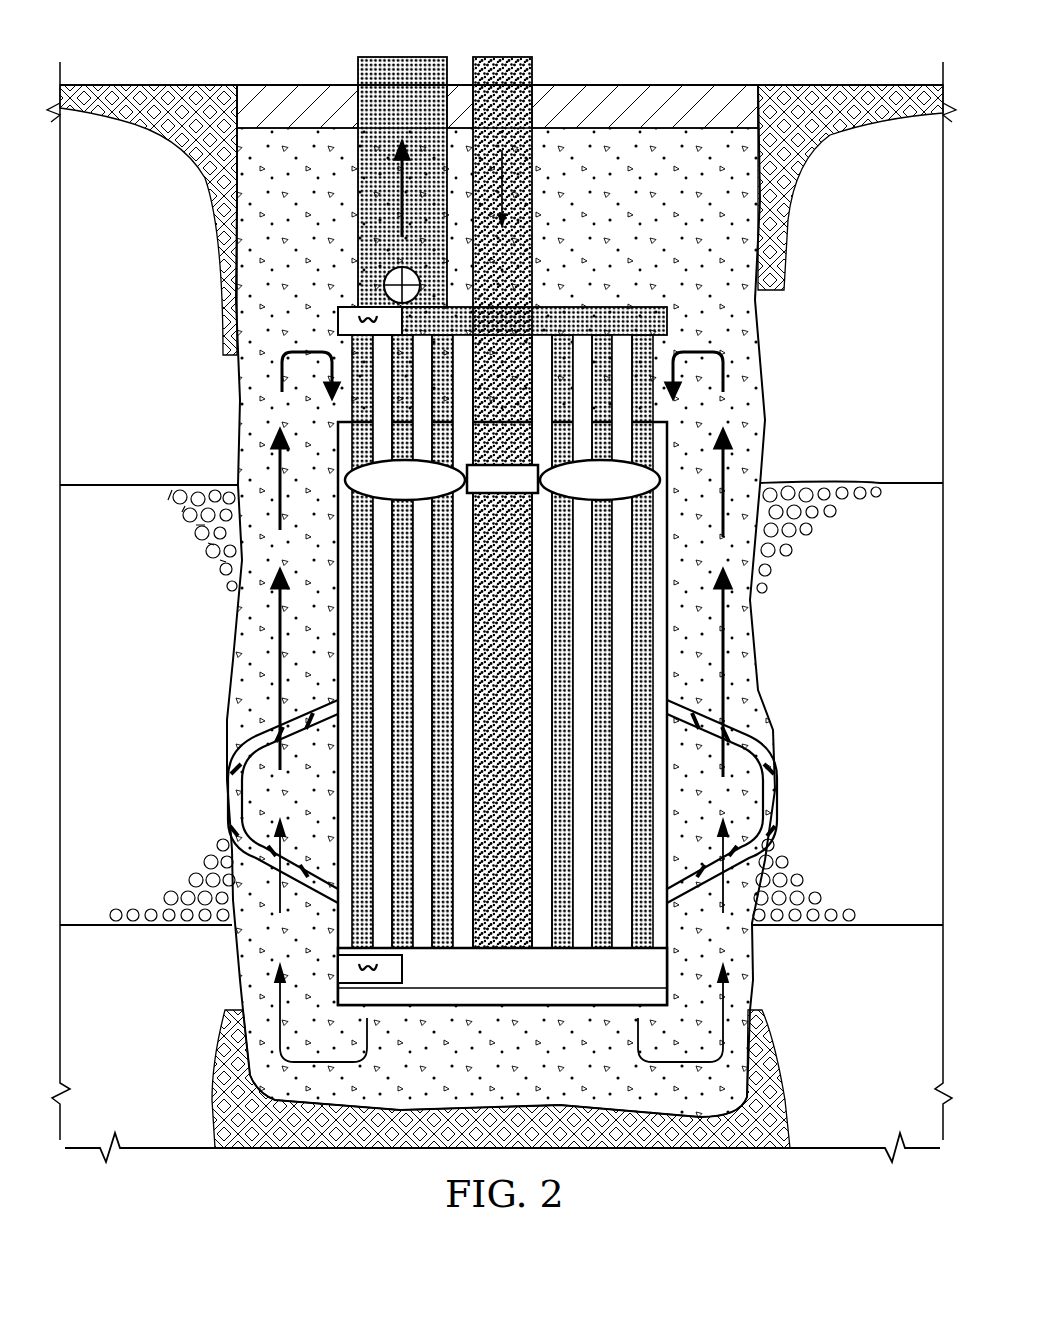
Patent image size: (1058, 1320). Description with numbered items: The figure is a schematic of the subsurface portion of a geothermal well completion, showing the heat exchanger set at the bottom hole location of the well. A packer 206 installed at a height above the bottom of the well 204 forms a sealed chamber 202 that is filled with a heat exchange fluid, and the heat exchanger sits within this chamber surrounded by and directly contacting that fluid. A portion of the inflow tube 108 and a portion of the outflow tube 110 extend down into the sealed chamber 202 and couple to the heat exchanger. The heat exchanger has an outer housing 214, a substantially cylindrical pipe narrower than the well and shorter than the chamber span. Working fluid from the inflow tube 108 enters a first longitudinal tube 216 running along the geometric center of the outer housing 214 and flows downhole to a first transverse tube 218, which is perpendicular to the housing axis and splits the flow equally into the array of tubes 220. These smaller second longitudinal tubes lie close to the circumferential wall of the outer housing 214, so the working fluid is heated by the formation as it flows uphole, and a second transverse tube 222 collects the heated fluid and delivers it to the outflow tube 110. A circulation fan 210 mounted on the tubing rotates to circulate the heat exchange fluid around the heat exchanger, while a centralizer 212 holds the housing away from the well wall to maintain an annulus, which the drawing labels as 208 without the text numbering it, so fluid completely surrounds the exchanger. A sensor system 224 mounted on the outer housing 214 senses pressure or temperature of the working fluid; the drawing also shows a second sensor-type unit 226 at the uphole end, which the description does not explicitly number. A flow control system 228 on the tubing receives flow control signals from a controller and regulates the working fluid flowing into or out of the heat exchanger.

The inflow tube 108 is at (533, 190).
The outflow tube 110 is at (358, 190).
The sealed chamber 202 is at (755, 330).
The bottom of the well 204 is at (755, 1088).
The packer 206 is at (672, 84).
The wellbore 208 is at (720, 668).
The circulation fan 210 is at (660, 490).
The centralizer 212 is at (752, 815).
The outer housing 214 is at (325, 928).
The first longitudinal tube 216 is at (498, 940).
The first transverse tube 218 is at (546, 992).
The array of tubes 220 is at (363, 543).
The second transverse tube 222 is at (610, 307).
The sensor system 224 is at (405, 968).
The upper sensor 226 is at (338, 326).
The flow control system 228 is at (386, 277).